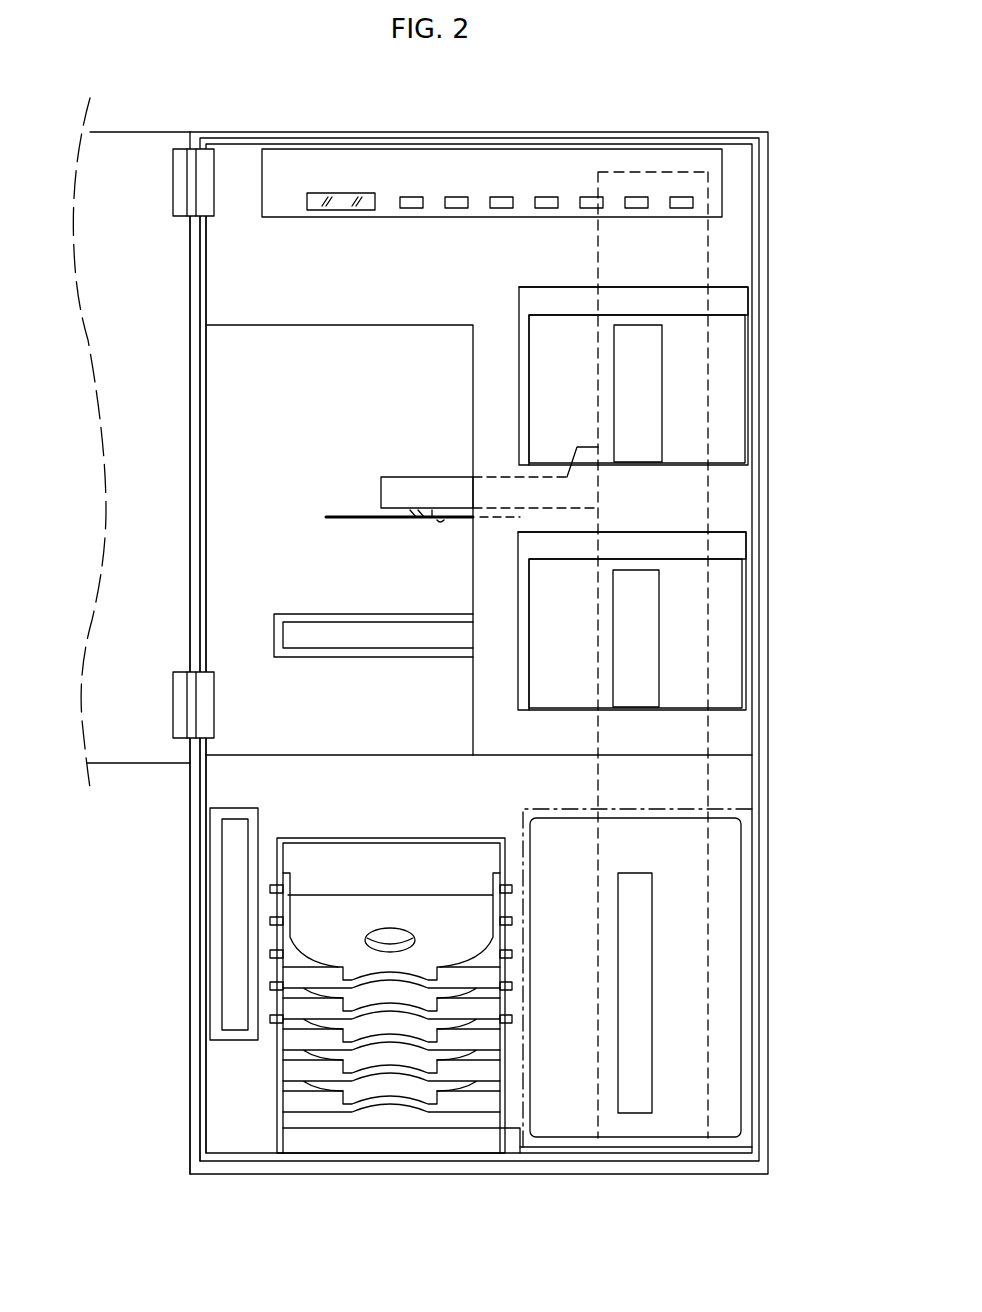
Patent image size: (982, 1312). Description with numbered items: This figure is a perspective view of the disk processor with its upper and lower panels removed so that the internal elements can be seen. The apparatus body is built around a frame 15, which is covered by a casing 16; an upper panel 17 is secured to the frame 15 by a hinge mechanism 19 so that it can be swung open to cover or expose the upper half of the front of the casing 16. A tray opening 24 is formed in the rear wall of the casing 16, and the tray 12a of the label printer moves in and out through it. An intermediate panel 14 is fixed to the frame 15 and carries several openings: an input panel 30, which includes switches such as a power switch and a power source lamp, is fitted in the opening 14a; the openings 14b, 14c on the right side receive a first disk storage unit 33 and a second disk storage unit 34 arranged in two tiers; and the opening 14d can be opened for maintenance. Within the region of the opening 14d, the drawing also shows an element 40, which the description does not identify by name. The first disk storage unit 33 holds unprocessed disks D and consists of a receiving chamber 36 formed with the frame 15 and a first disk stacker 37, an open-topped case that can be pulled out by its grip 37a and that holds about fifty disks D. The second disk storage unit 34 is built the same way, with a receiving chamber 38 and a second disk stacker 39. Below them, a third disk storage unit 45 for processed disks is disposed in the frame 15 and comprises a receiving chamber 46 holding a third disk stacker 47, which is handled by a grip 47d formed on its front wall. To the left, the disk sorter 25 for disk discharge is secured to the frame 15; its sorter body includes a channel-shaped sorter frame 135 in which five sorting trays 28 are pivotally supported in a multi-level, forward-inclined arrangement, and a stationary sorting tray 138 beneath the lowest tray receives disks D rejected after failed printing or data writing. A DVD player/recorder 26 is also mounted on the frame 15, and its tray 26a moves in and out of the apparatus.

The tray 12a is at (368, 637).
The intermediate panel 14 is at (738, 165).
The opening 14a is at (277, 200).
The opening 14b is at (540, 299).
The opening 14c is at (540, 545).
The opening 14d is at (392, 340).
The frame 15 is at (210, 538).
The casing 16 is at (762, 156).
The upper panel 17 is at (133, 150).
The hinge mechanism 19 is at (181, 152).
The tray opening 24 is at (328, 627).
The disk sorter 25 is at (395, 1004).
The DVD player/recorder 26 is at (213, 942).
The tray 26a is at (228, 880).
The sorting trays 28 is at (326, 910).
The input panel 30 is at (522, 170).
The first disk storage unit 33 is at (641, 337).
The second disk storage unit 34 is at (644, 582).
The receiving chamber 36 is at (651, 300).
The first disk stacker 37 is at (725, 370).
The grip 37a is at (635, 450).
The receiving chamber 38 is at (684, 545).
The second disk stacker 39 is at (725, 633).
The dispenser 40 is at (398, 481).
The disk D is at (335, 515).
The third disk storage unit 45 is at (671, 975).
The receiving chamber 46 is at (668, 810).
The third disk stacker 47 is at (725, 975).
The grip 47d is at (633, 1110).
The sorter frame 135 is at (480, 843).
The stationary sorting tray 138 is at (455, 1140).